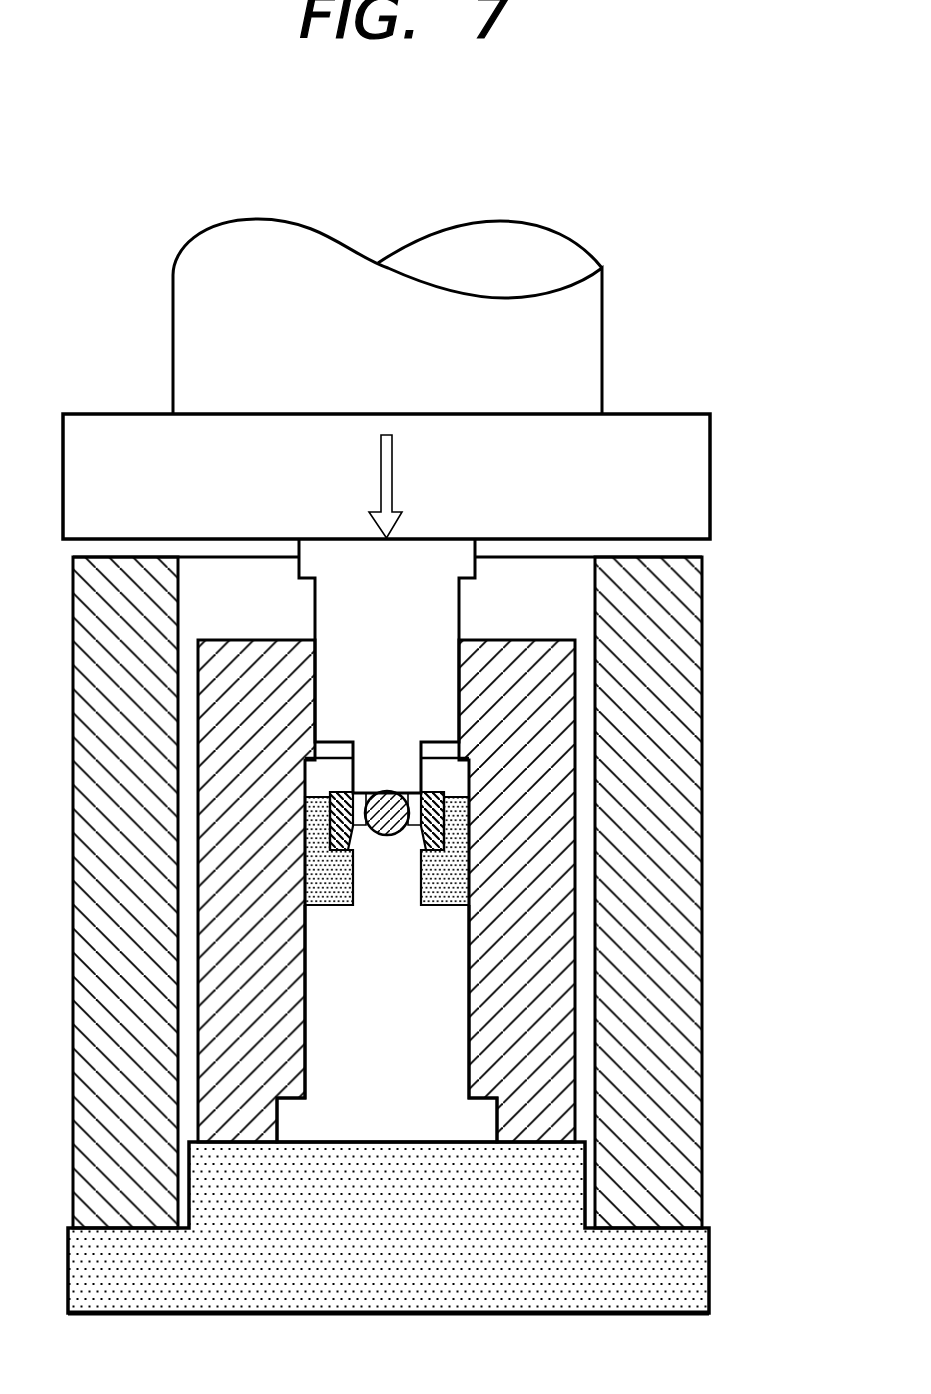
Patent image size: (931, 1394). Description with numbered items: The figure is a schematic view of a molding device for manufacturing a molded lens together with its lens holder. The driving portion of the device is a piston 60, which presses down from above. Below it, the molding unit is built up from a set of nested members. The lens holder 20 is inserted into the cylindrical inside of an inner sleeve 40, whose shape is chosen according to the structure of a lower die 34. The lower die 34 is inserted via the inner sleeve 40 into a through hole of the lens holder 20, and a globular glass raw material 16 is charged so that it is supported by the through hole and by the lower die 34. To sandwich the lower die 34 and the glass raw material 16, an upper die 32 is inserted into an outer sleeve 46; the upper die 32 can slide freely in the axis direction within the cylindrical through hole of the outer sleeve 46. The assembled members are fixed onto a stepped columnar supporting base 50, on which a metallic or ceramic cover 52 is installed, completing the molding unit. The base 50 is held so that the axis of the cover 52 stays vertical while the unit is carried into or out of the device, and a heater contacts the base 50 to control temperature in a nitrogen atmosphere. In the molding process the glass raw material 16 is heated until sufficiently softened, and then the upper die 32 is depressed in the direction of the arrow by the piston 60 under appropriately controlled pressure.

The piston 60 is at (690, 468).
The cover 52 is at (662, 631).
The outer sleeve 46 is at (532, 1033).
The upper die 32 is at (410, 700).
The inner sleeve 40 is at (440, 897).
The lens holder 20 is at (440, 802).
The glass raw material 16 is at (387, 815).
The lower die 34 is at (435, 1042).
The base 50 is at (673, 1285).